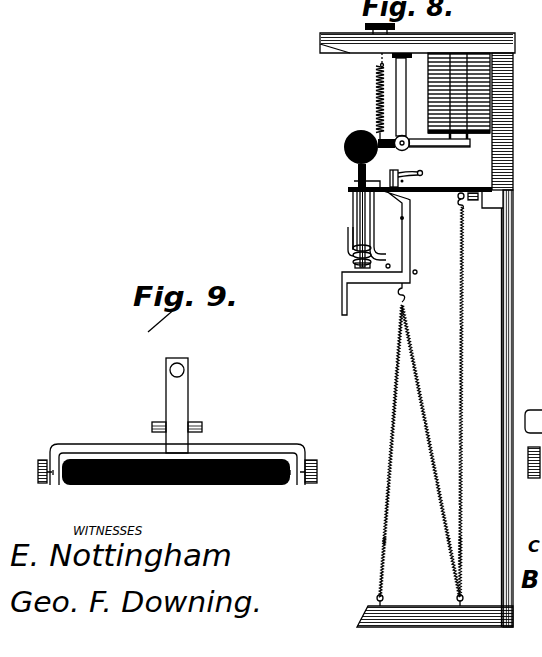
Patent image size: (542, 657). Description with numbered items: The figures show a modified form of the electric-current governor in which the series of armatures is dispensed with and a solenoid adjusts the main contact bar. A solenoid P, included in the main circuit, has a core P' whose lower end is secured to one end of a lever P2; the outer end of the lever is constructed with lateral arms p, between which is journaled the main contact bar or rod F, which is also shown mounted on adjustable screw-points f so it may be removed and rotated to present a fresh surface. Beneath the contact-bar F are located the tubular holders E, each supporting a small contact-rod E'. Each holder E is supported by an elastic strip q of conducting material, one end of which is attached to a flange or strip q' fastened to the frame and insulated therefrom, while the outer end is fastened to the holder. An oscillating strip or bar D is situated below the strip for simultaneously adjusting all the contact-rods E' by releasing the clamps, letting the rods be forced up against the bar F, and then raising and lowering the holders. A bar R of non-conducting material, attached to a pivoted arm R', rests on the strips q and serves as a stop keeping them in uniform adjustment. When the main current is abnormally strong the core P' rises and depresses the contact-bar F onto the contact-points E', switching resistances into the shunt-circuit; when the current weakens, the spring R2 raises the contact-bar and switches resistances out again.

In FIG. 8, the spring R2 is at (378, 93).
In FIG. 8, the solenoid P is at (478, 96).
In FIG. 8, the solenoid core P' is at (478, 143).
In FIG. 9, the solenoid core P' is at (185, 405).
In FIG. 8, the lever P2 is at (407, 108).
In FIG. 9, the lever P2 is at (186, 417).
In FIG. 8, the contact-rod E' is at (354, 175).
In FIG. 8, the bar of non-conducting material R is at (392, 173).
In FIG. 8, the pivoted arm R' is at (419, 173).
In FIG. 8, the tubular holder E is at (359, 229).
In FIG. 8, the elastic strip q is at (420, 197).
In FIG. 8, the flange or strip q' is at (495, 394).
In FIG. 8, the oscillating strip or bar D is at (407, 245).
In FIG. 9, the lateral arms p is at (177, 457).
In FIG. 9, the adjustable screw-points f is at (322, 472).
In FIG. 9, the main contact bar or rod F is at (176, 481).